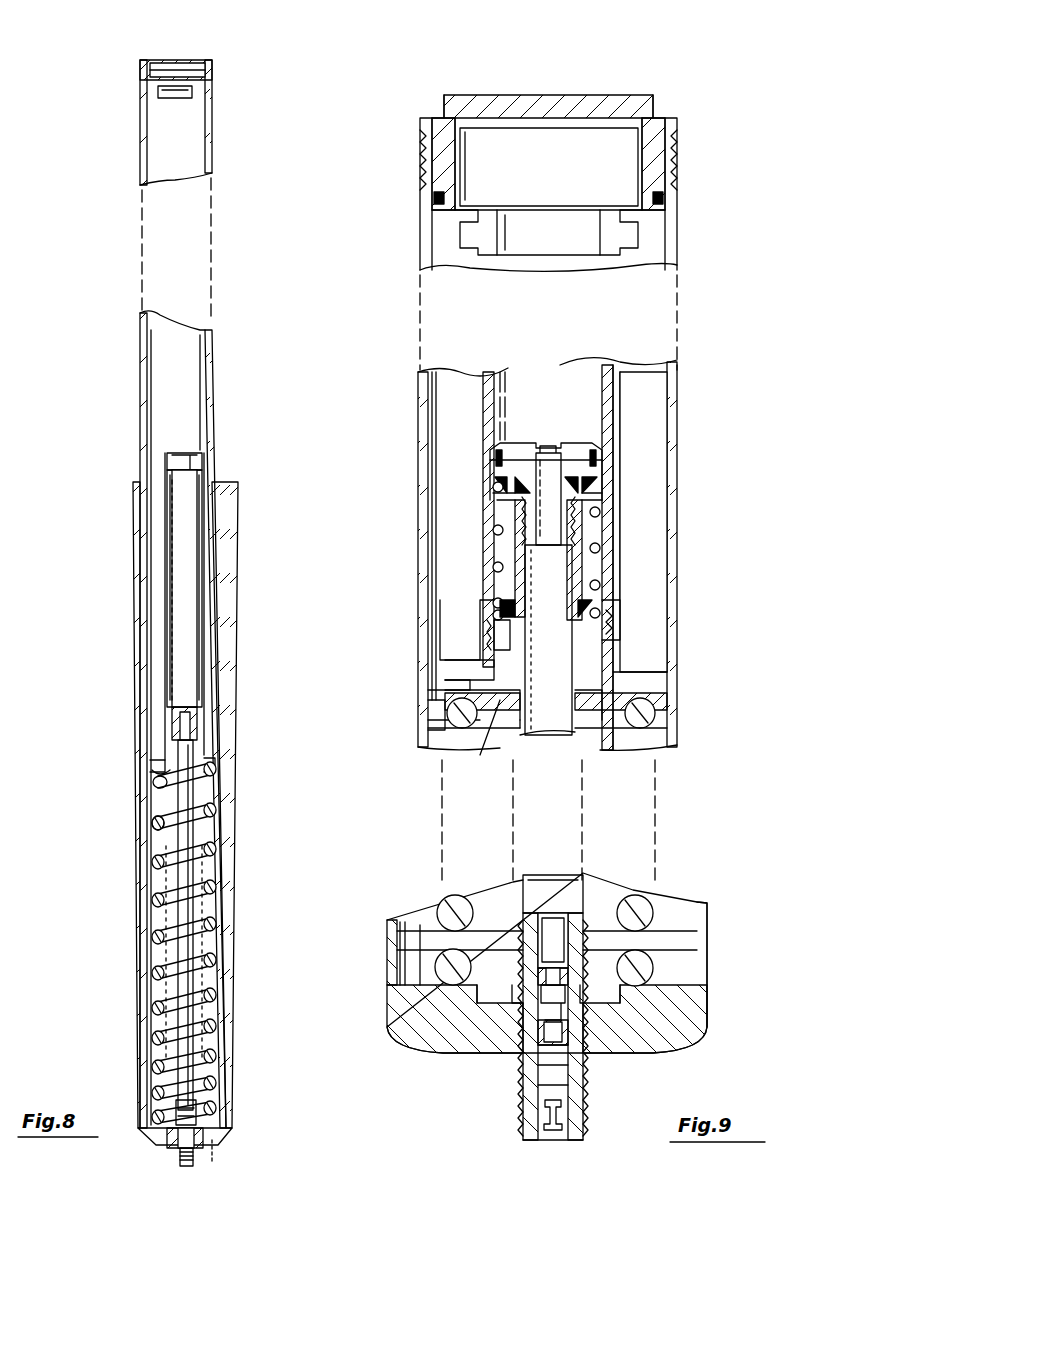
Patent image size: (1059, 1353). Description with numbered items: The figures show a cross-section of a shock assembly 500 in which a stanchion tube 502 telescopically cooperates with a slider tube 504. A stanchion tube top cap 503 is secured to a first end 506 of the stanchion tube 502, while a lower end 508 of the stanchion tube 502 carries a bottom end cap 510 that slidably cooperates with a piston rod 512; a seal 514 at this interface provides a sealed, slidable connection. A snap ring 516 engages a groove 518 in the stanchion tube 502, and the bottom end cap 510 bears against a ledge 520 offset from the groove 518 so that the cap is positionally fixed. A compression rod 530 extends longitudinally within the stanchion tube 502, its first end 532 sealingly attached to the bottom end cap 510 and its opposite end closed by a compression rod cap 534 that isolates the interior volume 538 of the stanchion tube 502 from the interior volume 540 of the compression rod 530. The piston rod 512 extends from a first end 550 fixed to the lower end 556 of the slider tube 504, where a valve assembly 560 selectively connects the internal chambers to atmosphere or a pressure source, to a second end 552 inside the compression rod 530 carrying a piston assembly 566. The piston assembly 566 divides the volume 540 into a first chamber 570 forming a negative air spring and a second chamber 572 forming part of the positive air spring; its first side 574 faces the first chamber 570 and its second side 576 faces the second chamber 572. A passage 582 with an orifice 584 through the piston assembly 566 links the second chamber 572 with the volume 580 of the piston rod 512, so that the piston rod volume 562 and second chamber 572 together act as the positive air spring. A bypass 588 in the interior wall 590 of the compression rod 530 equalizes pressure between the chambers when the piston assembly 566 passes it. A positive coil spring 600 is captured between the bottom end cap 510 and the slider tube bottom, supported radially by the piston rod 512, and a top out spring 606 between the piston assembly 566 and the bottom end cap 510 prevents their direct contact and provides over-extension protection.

In FIG. 8, the shock assembly 500 is at (238, 80).
In FIG. 9, the shock assembly 500 is at (714, 84).
In FIG. 8, the stanchion tube 502 is at (213, 133).
In FIG. 9, the stanchion tube 502 is at (678, 190).
In FIG. 8, the stanchion tube top cap 503 is at (180, 68).
In FIG. 9, the stanchion tube top cap 503 is at (592, 97).
In FIG. 8, the slider tube 504 is at (137, 622).
In FIG. 9, the slider tube 504 is at (708, 907).
In FIG. 8, the first end of stanchion tube 506 is at (125, 110).
In FIG. 8, the lower end of stanchion tube 508 is at (132, 760).
In FIG. 9, the lower end of stanchion tube 508 is at (765, 652).
In FIG. 8, the bottom end cap 510 is at (155, 782).
In FIG. 9, the bottom end cap 510 is at (452, 682).
In FIG. 8, the piston rod 512 is at (165, 904).
In FIG. 9, the seal 514 is at (508, 700).
In FIG. 9, the snap ring 516 is at (678, 718).
In FIG. 9, the groove 518 is at (670, 700).
In FIG. 9, the ledge 520 is at (660, 620).
In FIG. 9, the compression rod 530 is at (483, 508).
In FIG. 9, the first end of compression rod 532 is at (478, 643).
In FIG. 8, the compression rod cap 534 is at (168, 458).
In FIG. 8, the interior volume of stanchion tube 538 is at (155, 342).
In FIG. 8, the interior volume of compression rod 540 is at (180, 522).
In FIG. 9, the interior volume of compression rod 540 is at (588, 392).
In FIG. 8, the first end of piston rod 550 is at (220, 1102).
In FIG. 8, the second end of piston rod 552 is at (242, 748).
In FIG. 8, the lower end of slider tube 556 is at (222, 1136).
In FIG. 9, the lower end of slider tube 556 is at (665, 1033).
In FIG. 8, the valve assembly 560 is at (172, 1155).
In FIG. 9, the valve assembly 560 is at (498, 1095).
In FIG. 8, the volume of piston rod 562 is at (160, 876).
In FIG. 8, the piston assembly 566 is at (195, 712).
In FIG. 9, the piston assembly 566 is at (498, 451).
In FIG. 9, the first chamber 570 is at (590, 565).
In FIG. 9, the second chamber 572 is at (580, 360).
In FIG. 9, the first side of piston assembly 574 is at (602, 496).
In FIG. 9, the second side of piston assembly 576 is at (548, 443).
In FIG. 9, the volume of piston rod 580 is at (562, 885).
In FIG. 9, the passage 582 is at (520, 480).
In FIG. 9, the orifice 584 is at (548, 432).
In FIG. 9, the bypass 588 is at (632, 362).
In FIG. 8, the interior wall of compression rod 590 is at (168, 555).
In FIG. 9, the interior wall of compression rod 590 is at (514, 362).
In FIG. 8, the positive coil spring 600 is at (151, 823).
In FIG. 9, the positive coil spring 600 is at (650, 915).
In FIG. 9, the top out spring 606 is at (600, 587).